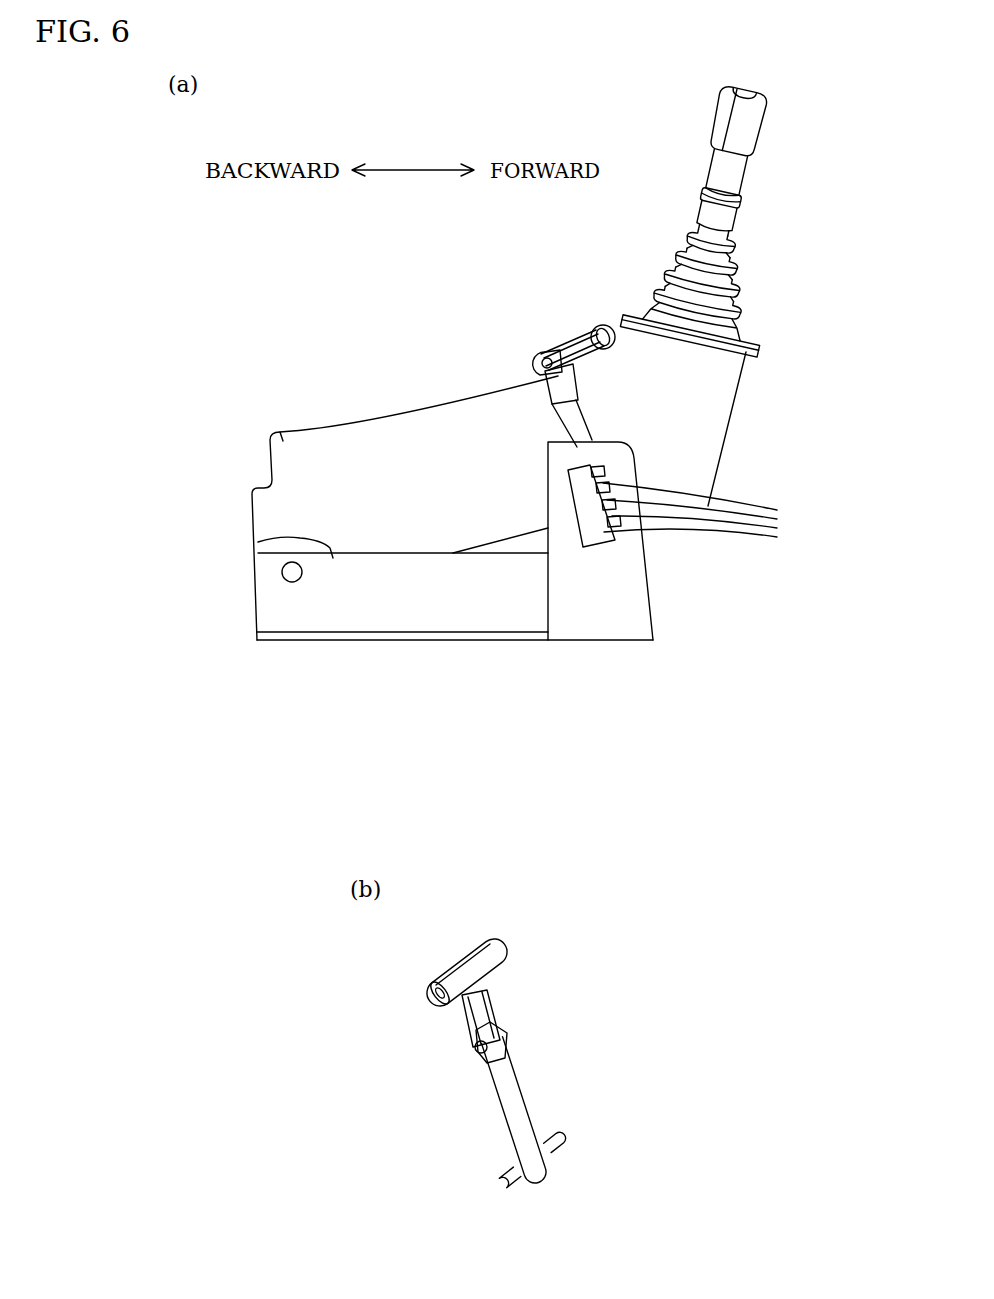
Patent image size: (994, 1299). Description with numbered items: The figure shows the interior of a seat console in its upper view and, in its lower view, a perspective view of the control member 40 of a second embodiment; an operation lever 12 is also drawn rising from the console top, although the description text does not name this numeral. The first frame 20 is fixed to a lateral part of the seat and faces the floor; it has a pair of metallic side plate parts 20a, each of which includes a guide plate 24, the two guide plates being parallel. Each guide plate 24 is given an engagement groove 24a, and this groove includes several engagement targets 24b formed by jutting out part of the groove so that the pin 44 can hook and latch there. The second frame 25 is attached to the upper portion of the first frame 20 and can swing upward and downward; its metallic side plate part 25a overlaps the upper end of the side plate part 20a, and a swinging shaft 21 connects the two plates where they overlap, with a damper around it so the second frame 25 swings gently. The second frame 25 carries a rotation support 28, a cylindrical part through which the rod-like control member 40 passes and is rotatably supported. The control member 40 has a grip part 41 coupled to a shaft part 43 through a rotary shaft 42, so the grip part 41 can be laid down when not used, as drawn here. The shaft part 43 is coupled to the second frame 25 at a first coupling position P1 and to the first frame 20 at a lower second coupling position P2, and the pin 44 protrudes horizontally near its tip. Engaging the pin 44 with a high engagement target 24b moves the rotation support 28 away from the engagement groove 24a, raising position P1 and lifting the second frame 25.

The operation lever 12 is at (752, 178).
The first frame 20 is at (250, 620).
The side plate part 20a is at (258, 542).
The swinging shaft 21 is at (282, 570).
The guide plate 24 is at (655, 598).
The engagement groove 24a is at (588, 548).
The engagement target 24b is at (716, 510).
The second frame 25 is at (252, 474).
The side plate part 25a is at (280, 432).
The rotation support 28 is at (533, 393).
The control member 40 is at (604, 753).
The grip part 41 is at (593, 343).
The rotary shaft 42 is at (547, 353).
The shaft part 43 is at (592, 430).
The pin 44 is at (604, 467).
The first coupling position P1 is at (543, 420).
The second coupling position P2 is at (566, 536).